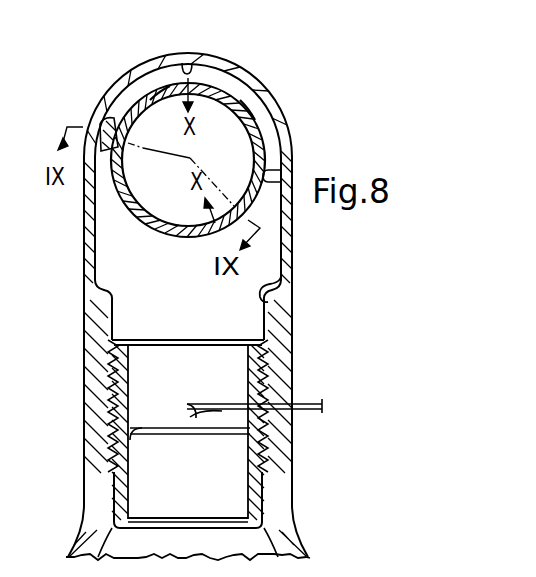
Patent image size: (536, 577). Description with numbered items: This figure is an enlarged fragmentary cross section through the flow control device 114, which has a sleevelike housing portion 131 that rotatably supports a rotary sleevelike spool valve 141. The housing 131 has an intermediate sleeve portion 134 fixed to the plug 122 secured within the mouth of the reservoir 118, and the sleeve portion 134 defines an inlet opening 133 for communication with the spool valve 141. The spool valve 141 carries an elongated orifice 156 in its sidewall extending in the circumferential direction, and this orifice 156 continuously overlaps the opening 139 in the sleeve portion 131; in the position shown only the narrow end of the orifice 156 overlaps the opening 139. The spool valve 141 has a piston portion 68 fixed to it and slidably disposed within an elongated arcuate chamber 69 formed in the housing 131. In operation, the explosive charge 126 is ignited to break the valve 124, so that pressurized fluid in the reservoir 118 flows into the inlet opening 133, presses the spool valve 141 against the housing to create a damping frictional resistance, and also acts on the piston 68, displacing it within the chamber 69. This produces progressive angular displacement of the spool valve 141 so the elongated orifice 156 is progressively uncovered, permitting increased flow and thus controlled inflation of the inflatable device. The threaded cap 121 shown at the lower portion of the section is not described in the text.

The piston portion 68 is at (104, 105).
The elongated arcuate chamber 69 is at (187, 67).
The flow control device 114 is at (292, 146).
The reservoir 118 is at (284, 545).
The threaded cap 121 is at (268, 354).
The plug 122 is at (124, 380).
The valve 124 is at (216, 520).
The explosive charge 126 is at (152, 442).
The sleevelike housing portion 131 is at (230, 67).
The inlet opening 133 is at (262, 292).
The intermediate sleeve portion 134 is at (88, 245).
The opening 139 is at (161, 234).
The rotary sleevelike spool valve 141 is at (158, 90).
The elongated orifice 156 is at (245, 112).